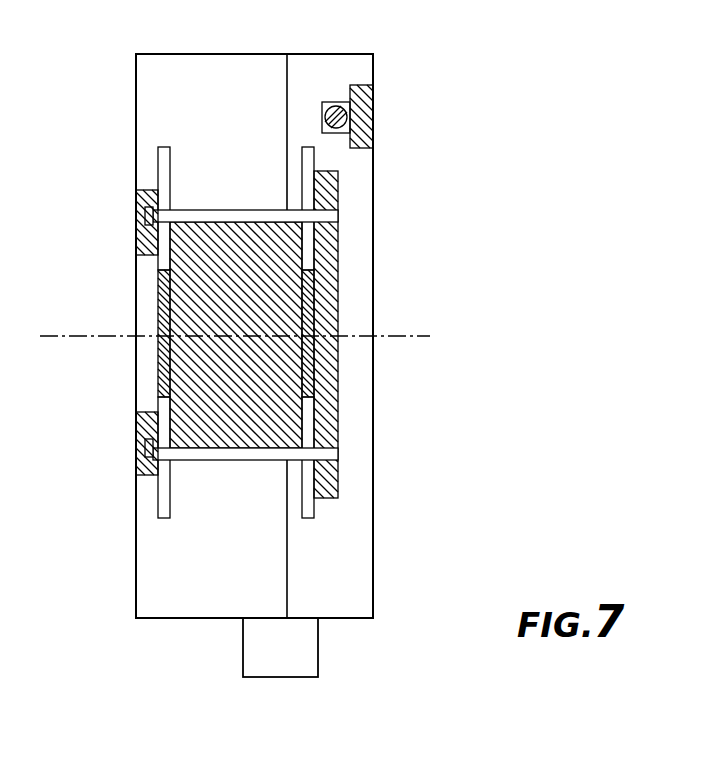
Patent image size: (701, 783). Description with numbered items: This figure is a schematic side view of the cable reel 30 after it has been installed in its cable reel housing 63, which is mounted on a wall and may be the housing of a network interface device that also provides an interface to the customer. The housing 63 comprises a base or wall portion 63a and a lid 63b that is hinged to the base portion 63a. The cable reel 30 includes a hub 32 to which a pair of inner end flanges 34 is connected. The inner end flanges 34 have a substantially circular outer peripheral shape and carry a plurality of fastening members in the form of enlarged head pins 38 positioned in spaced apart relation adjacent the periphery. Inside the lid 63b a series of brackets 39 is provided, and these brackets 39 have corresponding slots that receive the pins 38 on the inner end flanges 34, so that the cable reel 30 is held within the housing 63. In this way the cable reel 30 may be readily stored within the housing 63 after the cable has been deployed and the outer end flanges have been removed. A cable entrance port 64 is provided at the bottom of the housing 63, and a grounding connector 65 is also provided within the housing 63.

The cable reel 30 is at (157, 271).
The hub 32 is at (160, 357).
The inner end flanges 34 is at (158, 168).
The enlarged head pins 38 is at (145, 216).
The brackets 39 is at (136, 245).
The cable reel housing 63 is at (277, 366).
The base or wall portion 63a is at (373, 538).
The lid 63b is at (152, 618).
The cable entrance port 64 is at (255, 677).
The grounding connector 65 is at (337, 102).